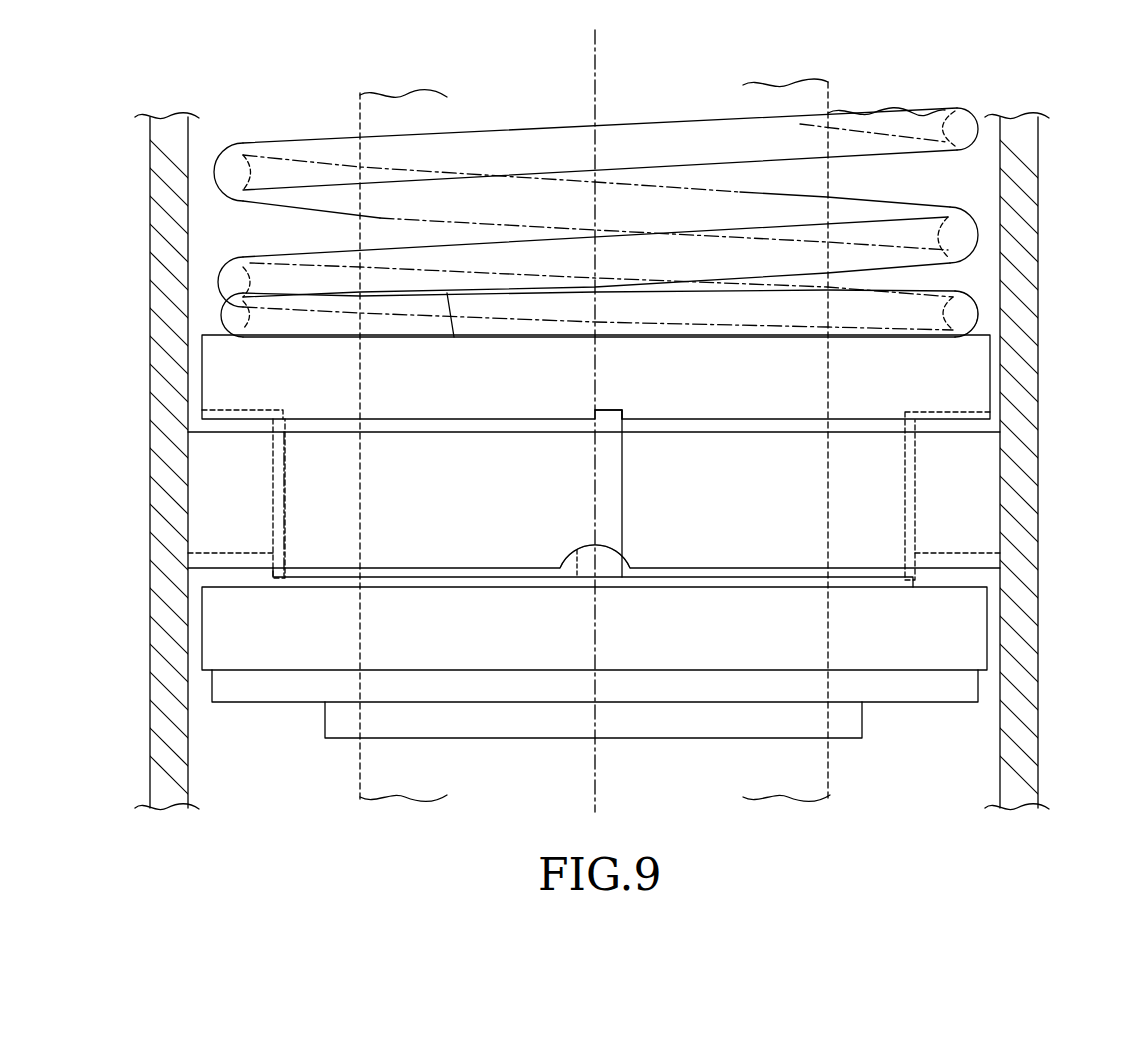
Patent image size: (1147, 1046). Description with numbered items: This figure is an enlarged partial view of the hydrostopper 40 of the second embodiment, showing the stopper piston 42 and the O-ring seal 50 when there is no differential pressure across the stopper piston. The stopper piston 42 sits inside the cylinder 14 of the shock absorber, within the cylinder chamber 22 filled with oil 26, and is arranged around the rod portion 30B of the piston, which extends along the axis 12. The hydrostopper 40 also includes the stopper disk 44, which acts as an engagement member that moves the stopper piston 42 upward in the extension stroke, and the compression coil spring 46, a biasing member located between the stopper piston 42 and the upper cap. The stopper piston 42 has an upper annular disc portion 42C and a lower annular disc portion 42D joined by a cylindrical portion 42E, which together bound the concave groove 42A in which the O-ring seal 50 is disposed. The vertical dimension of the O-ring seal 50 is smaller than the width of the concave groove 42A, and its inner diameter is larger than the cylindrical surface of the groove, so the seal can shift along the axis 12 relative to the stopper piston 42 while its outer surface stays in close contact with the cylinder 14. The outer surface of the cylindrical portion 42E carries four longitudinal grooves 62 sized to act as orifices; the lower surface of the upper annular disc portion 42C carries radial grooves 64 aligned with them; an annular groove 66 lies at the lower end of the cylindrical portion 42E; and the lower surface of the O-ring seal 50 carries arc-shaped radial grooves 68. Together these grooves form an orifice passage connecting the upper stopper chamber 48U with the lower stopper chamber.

The axis 12 is at (598, 62).
The cylinder 14 is at (154, 178).
The cylinder chamber 22 is at (213, 752).
The oil 26 is at (294, 120).
The rod portion 30B is at (399, 104).
The hydrostopper 40 is at (1010, 254).
The stopper piston 42 is at (181, 329).
The concave groove 42A is at (237, 427).
The upper annular disc portion 42C is at (977, 360).
The lower annular disc portion 42D is at (975, 637).
The cylindrical portion 42E is at (492, 453).
The stopper disk 44 is at (212, 685).
The compression coil spring 46 is at (966, 313).
The upper stopper chamber 48U is at (975, 740).
The O-ring seal 50 is at (200, 498).
The longitudinal grooves 62 is at (292, 495).
The radial grooves 64 is at (220, 410).
The annular groove 66 is at (460, 582).
The radial grooves 68 is at (218, 560).